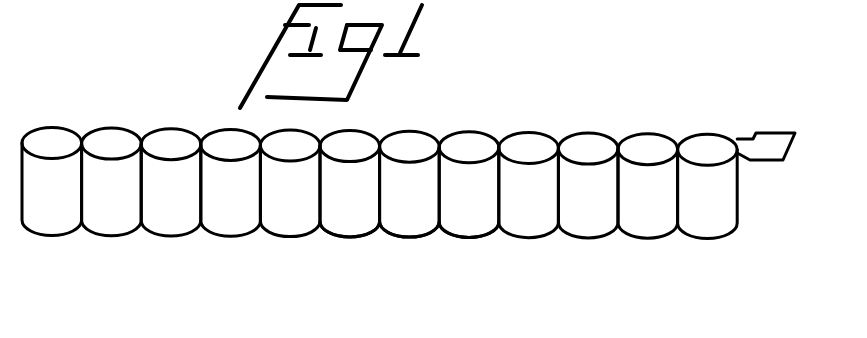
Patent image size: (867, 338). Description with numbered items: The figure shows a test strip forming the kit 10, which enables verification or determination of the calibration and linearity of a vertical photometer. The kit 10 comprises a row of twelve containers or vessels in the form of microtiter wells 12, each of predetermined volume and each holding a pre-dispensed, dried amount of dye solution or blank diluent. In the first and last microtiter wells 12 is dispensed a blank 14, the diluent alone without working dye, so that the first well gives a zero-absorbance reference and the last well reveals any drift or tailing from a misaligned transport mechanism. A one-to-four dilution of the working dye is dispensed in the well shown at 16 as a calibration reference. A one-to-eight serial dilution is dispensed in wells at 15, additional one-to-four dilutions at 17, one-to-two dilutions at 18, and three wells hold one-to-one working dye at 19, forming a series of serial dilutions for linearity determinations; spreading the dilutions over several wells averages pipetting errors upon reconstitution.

The kit 10 is at (408, 176).
The microtiter wells 12 is at (455, 239).
The blank 14 is at (57, 138).
The 1:8 serial dilution 15 is at (220, 136).
The 1:4 dilution 16 is at (106, 137).
The additional 1:4 dilutions 17 is at (350, 140).
The 1:2 dilutions 18 is at (467, 143).
The 1:1 dilutions 19 is at (650, 141).